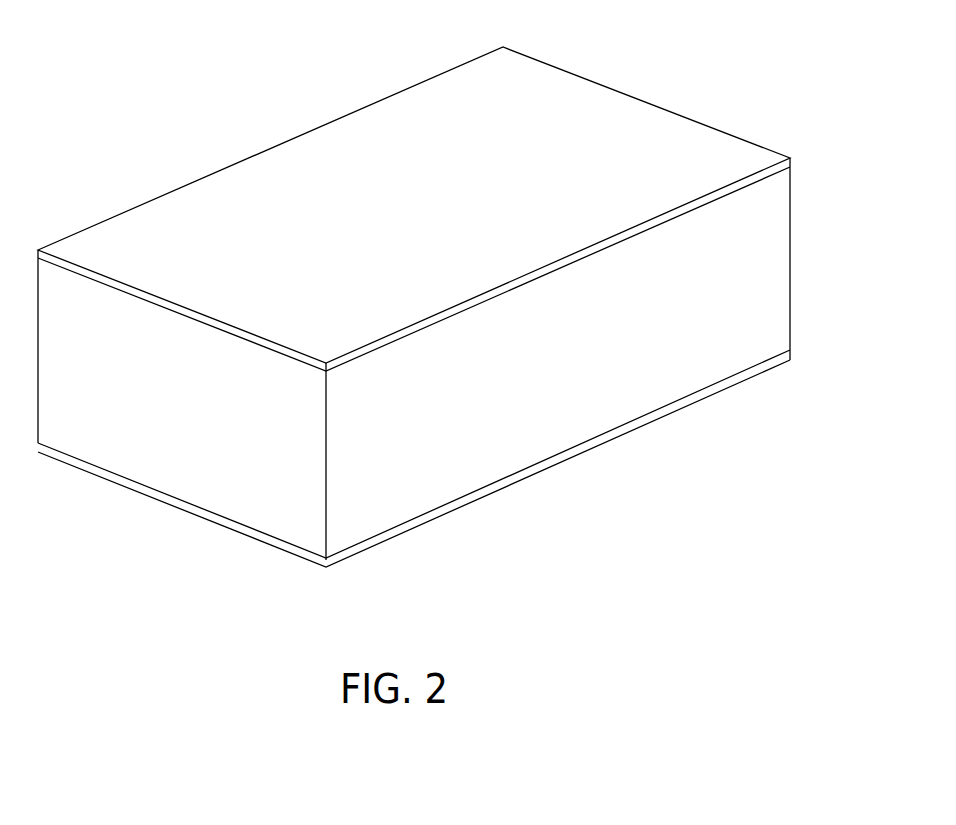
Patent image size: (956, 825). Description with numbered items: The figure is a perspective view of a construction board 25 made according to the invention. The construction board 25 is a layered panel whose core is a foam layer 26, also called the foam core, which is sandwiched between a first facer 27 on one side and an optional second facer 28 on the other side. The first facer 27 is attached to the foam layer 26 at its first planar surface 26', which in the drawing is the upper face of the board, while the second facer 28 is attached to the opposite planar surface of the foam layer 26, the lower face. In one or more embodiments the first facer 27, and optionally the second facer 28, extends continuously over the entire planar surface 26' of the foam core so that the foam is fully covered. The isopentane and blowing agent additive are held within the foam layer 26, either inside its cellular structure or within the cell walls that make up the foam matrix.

The construction board 25 is at (449, 300).
The foam layer 26 is at (593, 359).
The first planar surface 26' is at (423, 224).
The first facer 27 is at (575, 122).
The second facer 28 is at (558, 463).